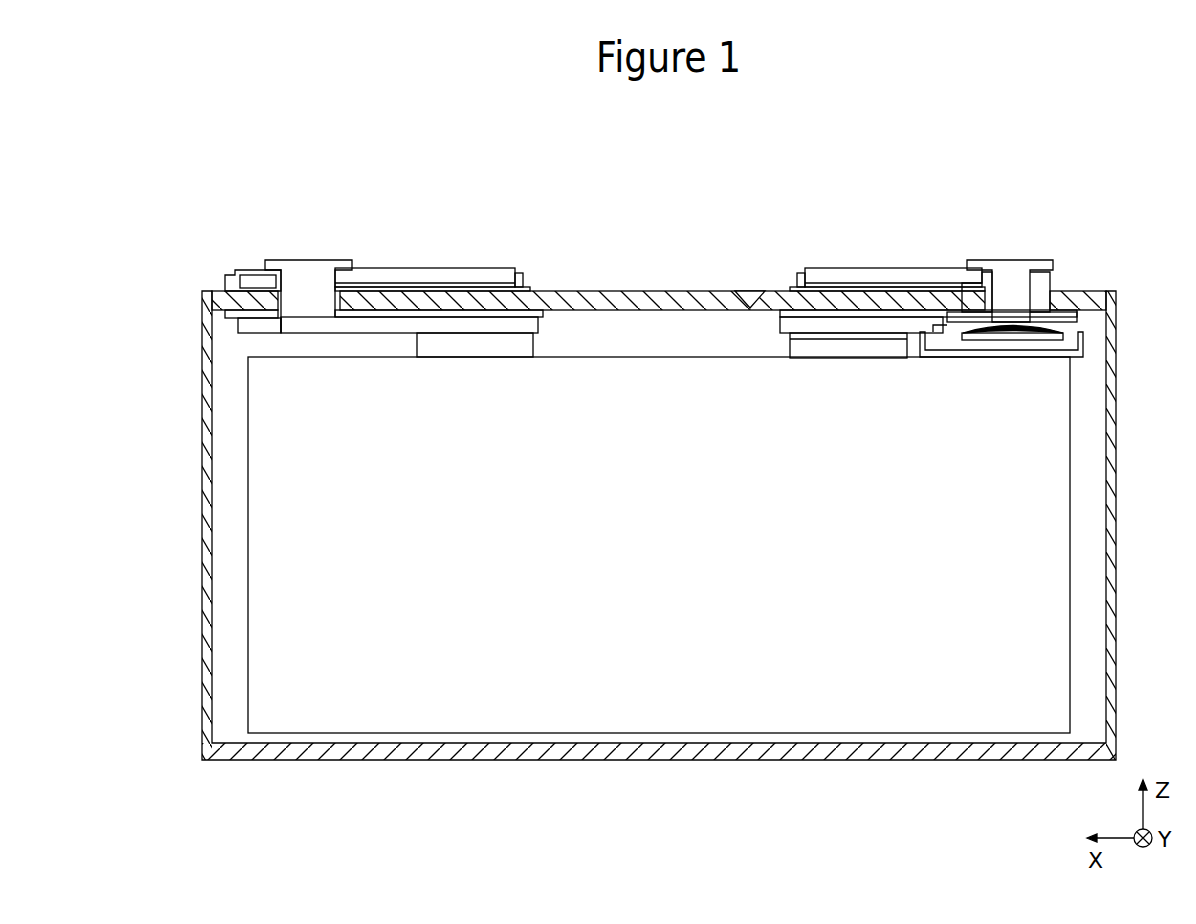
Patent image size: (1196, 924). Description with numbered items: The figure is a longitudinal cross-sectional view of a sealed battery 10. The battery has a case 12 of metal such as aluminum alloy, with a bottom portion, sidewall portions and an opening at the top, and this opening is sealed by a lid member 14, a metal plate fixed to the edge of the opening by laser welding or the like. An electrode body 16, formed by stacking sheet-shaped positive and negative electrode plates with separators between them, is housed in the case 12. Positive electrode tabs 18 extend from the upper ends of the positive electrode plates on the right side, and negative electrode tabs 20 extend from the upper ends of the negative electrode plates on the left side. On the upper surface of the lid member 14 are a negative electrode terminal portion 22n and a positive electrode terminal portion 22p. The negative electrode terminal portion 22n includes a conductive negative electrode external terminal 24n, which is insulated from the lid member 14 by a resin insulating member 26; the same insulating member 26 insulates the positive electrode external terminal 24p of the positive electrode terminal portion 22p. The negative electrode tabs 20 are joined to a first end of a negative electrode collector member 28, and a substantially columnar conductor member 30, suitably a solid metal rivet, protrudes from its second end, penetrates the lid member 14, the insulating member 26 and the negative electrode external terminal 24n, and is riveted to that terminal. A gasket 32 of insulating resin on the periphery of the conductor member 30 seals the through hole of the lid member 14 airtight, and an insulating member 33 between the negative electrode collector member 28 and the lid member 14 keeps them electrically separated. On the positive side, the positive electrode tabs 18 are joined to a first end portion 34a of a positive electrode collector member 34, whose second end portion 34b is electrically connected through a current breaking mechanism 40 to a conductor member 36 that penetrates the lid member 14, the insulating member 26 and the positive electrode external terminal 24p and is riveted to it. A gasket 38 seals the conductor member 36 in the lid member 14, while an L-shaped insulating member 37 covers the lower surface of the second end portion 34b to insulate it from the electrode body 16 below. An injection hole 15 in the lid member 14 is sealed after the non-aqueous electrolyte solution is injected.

The sealed battery 10 is at (690, 228).
The case 12 is at (203, 403).
The lid member 14 is at (656, 290).
The injection hole 15 is at (746, 290).
The electrode body 16 is at (673, 542).
The positive electrode tab 18 is at (785, 347).
The negative electrode tab 20 is at (535, 343).
The negative electrode terminal portion 22n is at (376, 249).
The positive electrode terminal portion 22p is at (919, 249).
The negative electrode external terminal 24n is at (426, 268).
The positive electrode external terminal 24p is at (858, 268).
The insulating member 26 is at (527, 270).
The negative electrode collector member 28 is at (255, 333).
The conductor member 30 is at (305, 258).
The gasket 32 is at (280, 320).
The insulating member 33 is at (545, 303).
The positive electrode collector member 34 is at (915, 333).
The first end portion 34a is at (838, 358).
The second end portion 34b is at (958, 358).
The conductor member 36 is at (1035, 261).
The insulating member 37 is at (1080, 352).
The gasket 38 is at (968, 300).
The current breaking mechanism 40 is at (1087, 325).